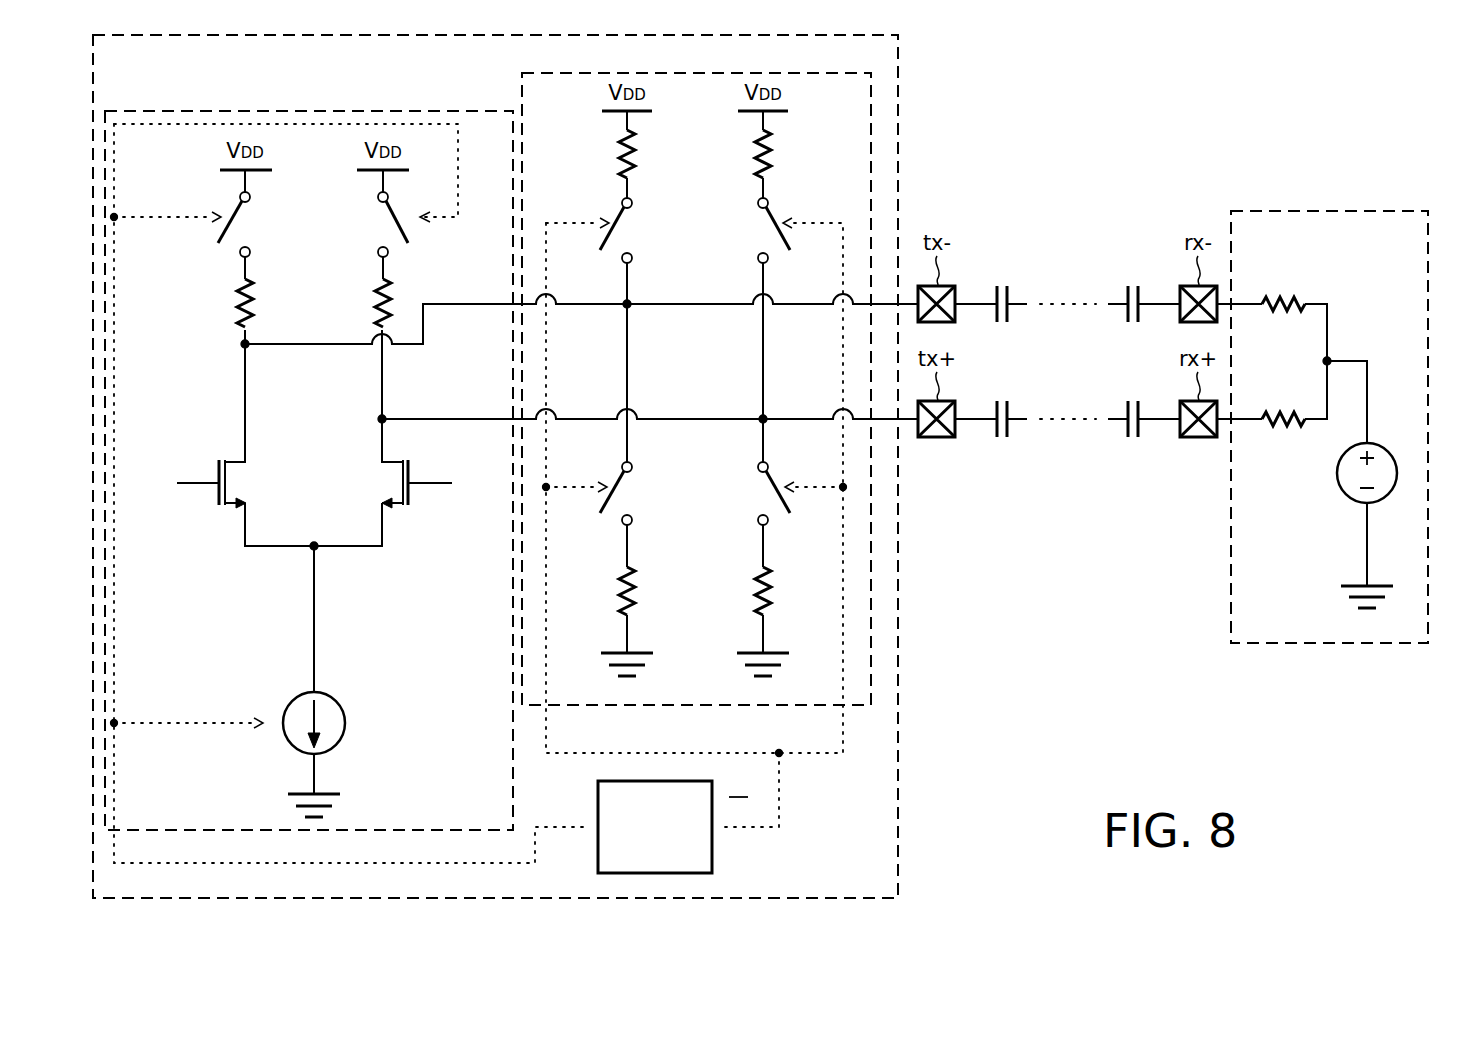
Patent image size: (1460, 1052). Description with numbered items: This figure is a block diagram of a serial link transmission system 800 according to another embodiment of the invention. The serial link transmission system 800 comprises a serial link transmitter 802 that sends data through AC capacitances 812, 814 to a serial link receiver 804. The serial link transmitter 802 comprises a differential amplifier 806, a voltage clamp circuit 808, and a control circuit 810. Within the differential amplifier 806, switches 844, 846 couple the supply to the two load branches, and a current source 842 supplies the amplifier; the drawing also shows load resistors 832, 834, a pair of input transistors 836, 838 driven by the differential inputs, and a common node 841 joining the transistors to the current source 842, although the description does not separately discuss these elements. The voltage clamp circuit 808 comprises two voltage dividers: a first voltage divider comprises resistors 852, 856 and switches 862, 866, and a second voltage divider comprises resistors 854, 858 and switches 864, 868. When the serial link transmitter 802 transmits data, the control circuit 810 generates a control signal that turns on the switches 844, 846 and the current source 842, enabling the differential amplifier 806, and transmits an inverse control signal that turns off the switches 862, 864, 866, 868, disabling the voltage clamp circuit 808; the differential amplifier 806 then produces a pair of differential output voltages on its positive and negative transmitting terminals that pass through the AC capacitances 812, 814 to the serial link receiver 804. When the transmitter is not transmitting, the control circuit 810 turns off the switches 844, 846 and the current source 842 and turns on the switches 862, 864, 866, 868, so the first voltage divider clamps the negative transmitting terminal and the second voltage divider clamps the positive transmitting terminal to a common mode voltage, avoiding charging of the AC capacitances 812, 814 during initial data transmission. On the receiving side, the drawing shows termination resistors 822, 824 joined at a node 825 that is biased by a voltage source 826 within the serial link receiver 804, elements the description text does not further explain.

The serial link transmission system 800 is at (1342, 105).
The serial link transmitter 802 is at (900, 113).
The serial link receiver 804 is at (1329, 211).
The differential amplifier 806 is at (322, 111).
The voltage clamp circuit 808 is at (522, 73).
The control circuit 810 is at (712, 851).
The AC capacitance 812 is at (1135, 285).
The AC capacitance 814 is at (1135, 401).
The termination resistor 822 is at (1285, 292).
The termination resistor 824 is at (1285, 406).
The common node 825 is at (1329, 360).
The voltage source 826 is at (1343, 501).
The load resistor 832 is at (233, 300).
The load resistor 834 is at (372, 300).
The input transistor 836 is at (220, 508).
The input transistor 838 is at (405, 508).
The common source node 841 is at (314, 541).
The current source 842 is at (337, 695).
The switch 844 is at (248, 223).
The switch 846 is at (378, 222).
The resistor 852 is at (640, 157).
The resistor 854 is at (775, 157).
The resistor 856 is at (640, 575).
The resistor 858 is at (750, 605).
The switch 862 is at (630, 230).
The switch 864 is at (758, 230).
The switch 866 is at (630, 493).
The switch 868 is at (758, 493).